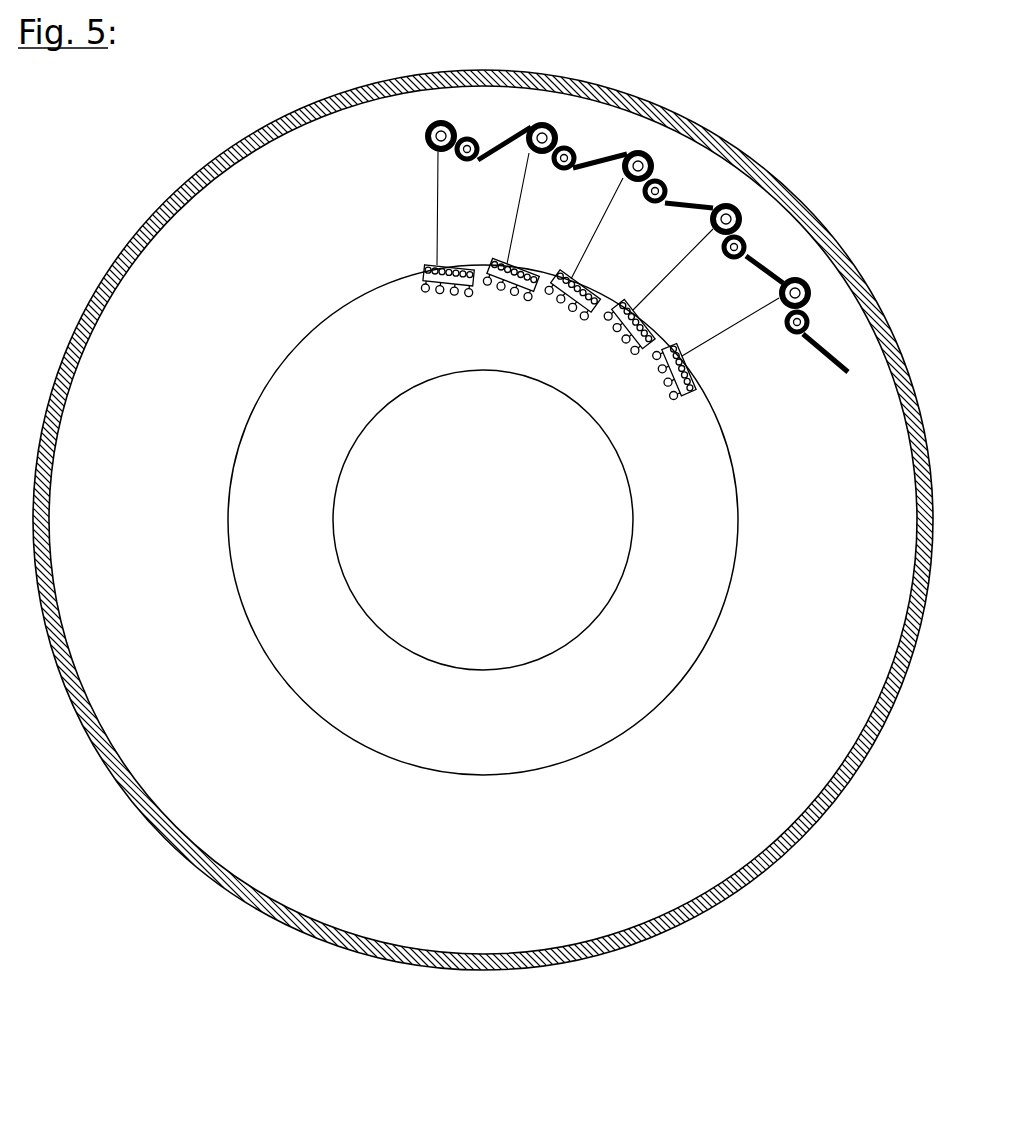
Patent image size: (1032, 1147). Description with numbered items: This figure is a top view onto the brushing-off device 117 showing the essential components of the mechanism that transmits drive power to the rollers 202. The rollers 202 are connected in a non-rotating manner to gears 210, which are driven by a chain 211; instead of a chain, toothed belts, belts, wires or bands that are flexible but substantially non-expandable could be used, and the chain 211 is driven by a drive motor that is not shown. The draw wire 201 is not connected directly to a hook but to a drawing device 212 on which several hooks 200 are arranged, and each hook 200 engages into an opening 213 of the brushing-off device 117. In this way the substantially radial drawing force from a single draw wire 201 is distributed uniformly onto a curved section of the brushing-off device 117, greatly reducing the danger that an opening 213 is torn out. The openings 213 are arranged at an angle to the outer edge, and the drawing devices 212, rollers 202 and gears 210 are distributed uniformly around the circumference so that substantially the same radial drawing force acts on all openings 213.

The brushing-off device 117 is at (331, 423).
The hook 200 is at (507, 328).
The draw wire 201 is at (437, 226).
The roller 202 is at (428, 143).
The gear 210 is at (427, 137).
The chain 211 is at (592, 172).
The drawing device 212 is at (468, 247).
The opening 213 is at (425, 293).